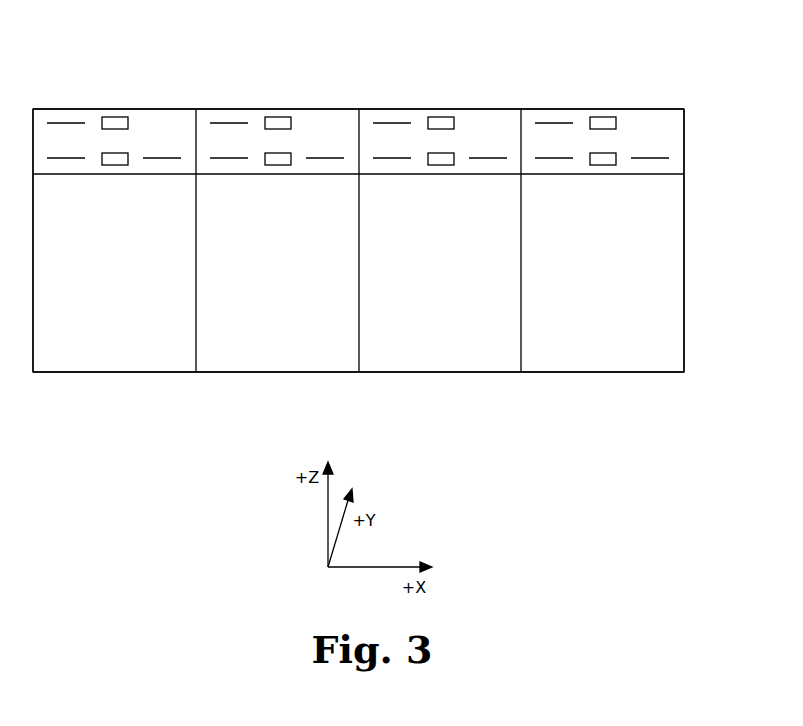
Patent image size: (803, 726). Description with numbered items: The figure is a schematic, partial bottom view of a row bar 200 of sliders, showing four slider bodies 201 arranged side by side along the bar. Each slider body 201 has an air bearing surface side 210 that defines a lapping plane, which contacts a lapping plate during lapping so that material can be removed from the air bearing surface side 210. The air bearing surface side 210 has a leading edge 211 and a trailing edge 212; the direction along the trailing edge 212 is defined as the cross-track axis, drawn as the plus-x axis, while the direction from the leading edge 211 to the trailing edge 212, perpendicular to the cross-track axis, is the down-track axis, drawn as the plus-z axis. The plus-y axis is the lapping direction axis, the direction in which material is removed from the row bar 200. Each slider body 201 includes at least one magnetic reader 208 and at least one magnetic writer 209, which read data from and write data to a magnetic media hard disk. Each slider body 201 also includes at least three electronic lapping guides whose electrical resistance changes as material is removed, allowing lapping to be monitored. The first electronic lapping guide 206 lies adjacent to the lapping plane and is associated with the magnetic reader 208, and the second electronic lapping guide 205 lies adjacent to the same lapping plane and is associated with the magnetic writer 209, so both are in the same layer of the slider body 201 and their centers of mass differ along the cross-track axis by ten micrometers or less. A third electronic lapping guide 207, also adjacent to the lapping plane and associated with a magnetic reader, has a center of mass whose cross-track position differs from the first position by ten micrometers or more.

The row bar 200 is at (693, 84).
The slider body 201 is at (66, 355).
The second electronic lapping guide 205 is at (42, 122).
The first electronic lapping guide 206 is at (37, 161).
The third electronic lapping guide 207 is at (129, 161).
The magnetic reader 208 is at (83, 164).
The magnetic writer 209 is at (82, 118).
The air bearing surface side 210 is at (64, 290).
The leading edge 211 is at (114, 373).
The trailing edge 212 is at (114, 108).